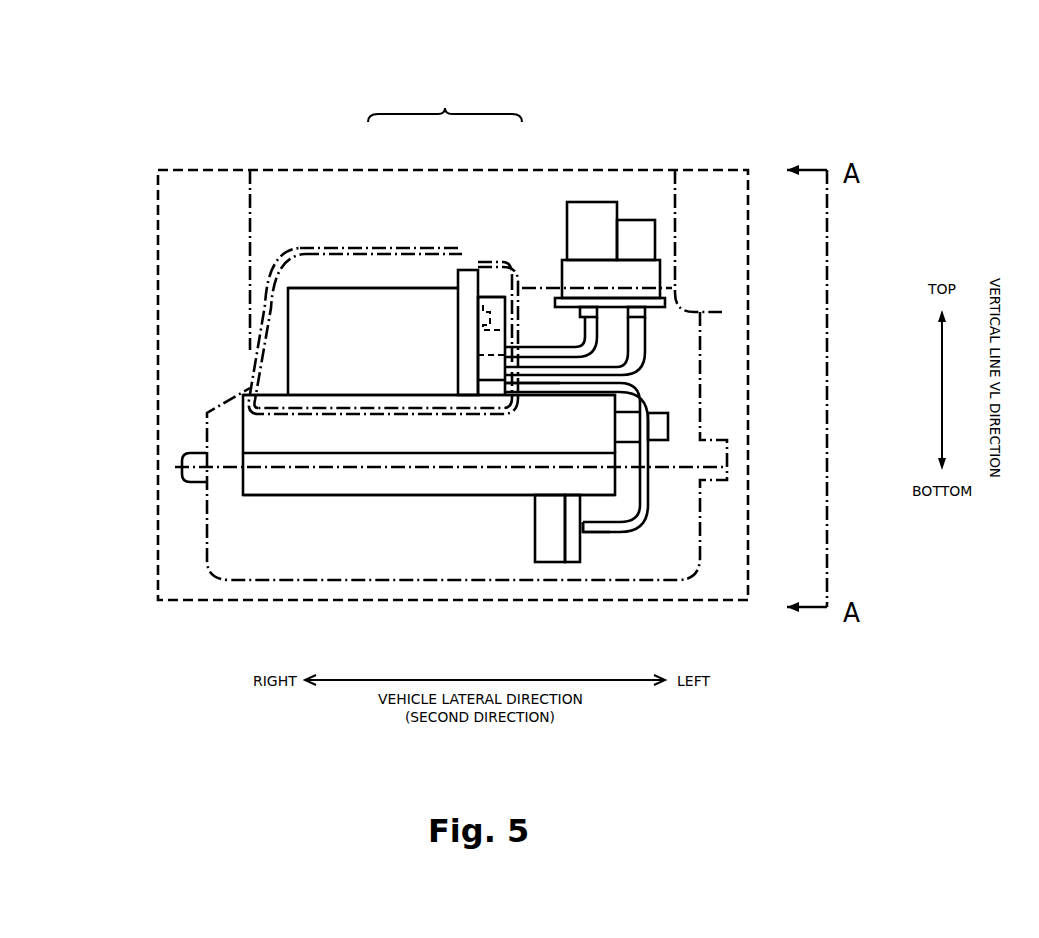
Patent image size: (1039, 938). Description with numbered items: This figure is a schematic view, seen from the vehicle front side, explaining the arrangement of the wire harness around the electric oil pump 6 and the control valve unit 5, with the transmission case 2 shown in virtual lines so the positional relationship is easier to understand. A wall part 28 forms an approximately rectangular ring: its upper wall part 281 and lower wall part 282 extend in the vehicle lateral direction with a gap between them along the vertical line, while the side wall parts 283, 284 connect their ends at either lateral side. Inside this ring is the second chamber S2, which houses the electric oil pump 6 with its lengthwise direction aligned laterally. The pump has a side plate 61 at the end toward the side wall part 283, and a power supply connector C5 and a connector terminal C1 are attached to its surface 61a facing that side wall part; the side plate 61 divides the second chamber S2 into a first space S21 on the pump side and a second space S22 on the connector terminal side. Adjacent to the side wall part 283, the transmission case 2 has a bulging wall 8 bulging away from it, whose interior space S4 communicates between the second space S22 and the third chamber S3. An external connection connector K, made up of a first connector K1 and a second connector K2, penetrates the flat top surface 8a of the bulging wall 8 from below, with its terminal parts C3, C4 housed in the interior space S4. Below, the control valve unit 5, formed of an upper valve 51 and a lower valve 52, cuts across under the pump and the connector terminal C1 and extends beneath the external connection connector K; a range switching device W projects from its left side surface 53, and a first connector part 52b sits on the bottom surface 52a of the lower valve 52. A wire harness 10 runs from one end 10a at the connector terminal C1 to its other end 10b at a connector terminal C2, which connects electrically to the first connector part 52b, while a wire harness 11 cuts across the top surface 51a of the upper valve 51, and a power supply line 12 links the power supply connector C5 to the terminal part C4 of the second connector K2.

The transmission case 2 is at (698, 138).
The control valve unit 5 is at (403, 455).
The upper valve 51 is at (362, 398).
The top surface of the upper valve 51a is at (322, 395).
The lower valve 52 is at (362, 509).
The bottom surface of the lower valve 52a is at (372, 497).
The first connector part 52b is at (535, 510).
The left side surface of the control valve unit 53 is at (625, 422).
The electric oil pump 6 is at (285, 305).
The side plate 61 is at (468, 262).
The surface of the side plate 61a is at (478, 296).
The bulging wall 8 is at (722, 312).
The top surface of the bulging wall 8a is at (676, 268).
The wire harness 10 is at (617, 457).
The one end of the wire harness 10a is at (528, 395).
The other end of the wire harness 10b is at (587, 522).
The wire harness 11 is at (552, 376).
The power supply line 12 is at (540, 355).
The wall part 28 is at (319, 312).
The upper wall part 281 is at (415, 248).
The lower wall part 282 is at (393, 413).
The side wall part 283 is at (518, 272).
The side wall part 284 is at (250, 352).
The connector terminal C1 is at (478, 384).
The connector terminal C2 is at (580, 548).
The terminal part C3 is at (636, 307).
The terminal part C4 is at (590, 307).
The power supply connector C5 is at (478, 320).
The external connection connector K is at (610, 199).
The first connector K1 is at (640, 212).
The second connector K2 is at (595, 195).
The second chamber S2 is at (445, 101).
The first space S21 is at (370, 276).
The second space S22 is at (485, 276).
The third chamber S3 is at (683, 539).
The interior space S4 is at (687, 377).
The range switching device W is at (678, 420).